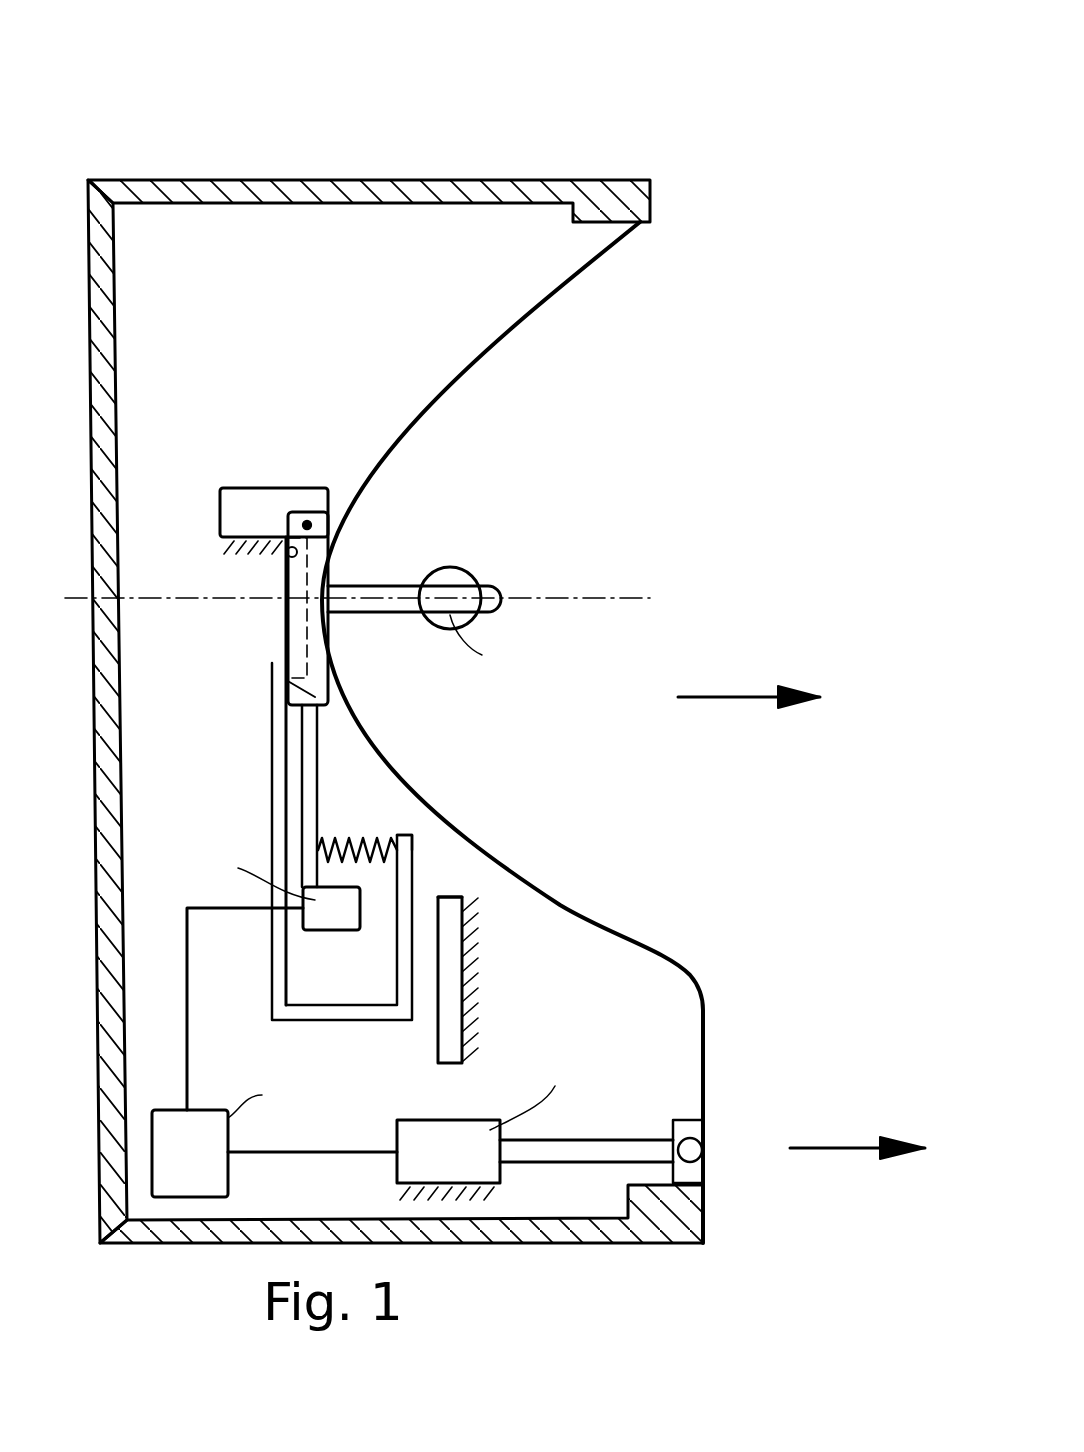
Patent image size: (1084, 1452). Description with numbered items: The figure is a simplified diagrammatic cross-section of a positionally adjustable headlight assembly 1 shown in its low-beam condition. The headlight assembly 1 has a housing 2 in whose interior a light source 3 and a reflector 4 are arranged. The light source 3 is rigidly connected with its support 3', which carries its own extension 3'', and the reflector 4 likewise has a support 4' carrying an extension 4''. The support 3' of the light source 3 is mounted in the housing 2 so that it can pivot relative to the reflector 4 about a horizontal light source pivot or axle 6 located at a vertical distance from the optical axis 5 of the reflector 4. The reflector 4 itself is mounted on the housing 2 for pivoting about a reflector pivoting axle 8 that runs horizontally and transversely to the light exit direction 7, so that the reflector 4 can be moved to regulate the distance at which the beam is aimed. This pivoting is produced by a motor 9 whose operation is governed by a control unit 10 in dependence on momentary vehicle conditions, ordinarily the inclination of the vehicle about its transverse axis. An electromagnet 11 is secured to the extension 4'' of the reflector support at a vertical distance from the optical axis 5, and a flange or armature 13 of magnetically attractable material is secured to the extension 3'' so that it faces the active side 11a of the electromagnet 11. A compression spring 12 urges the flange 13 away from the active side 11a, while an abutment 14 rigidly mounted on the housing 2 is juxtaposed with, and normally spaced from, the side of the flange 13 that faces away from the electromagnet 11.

The headlight assembly 1 is at (418, 628).
The housing 2 is at (648, 195).
The light source 3 is at (491, 579).
The support 3' is at (329, 608).
The extension 3'' is at (311, 841).
The reflector 4 is at (512, 732).
The support 4' is at (260, 771).
The extension 4'' is at (255, 792).
The optical axis 5 is at (610, 598).
The light source pivot or axle 6 is at (286, 556).
The light exit direction 7 is at (735, 700).
The reflector pivoting axle 8 is at (307, 525).
The motor 9 is at (442, 1140).
The control unit 10 is at (172, 1170).
The electromagnet 11 is at (330, 915).
The active side 11a is at (360, 907).
The compression spring 12 is at (375, 840).
The flange or armature 13 is at (408, 866).
The abutment 14 is at (458, 966).